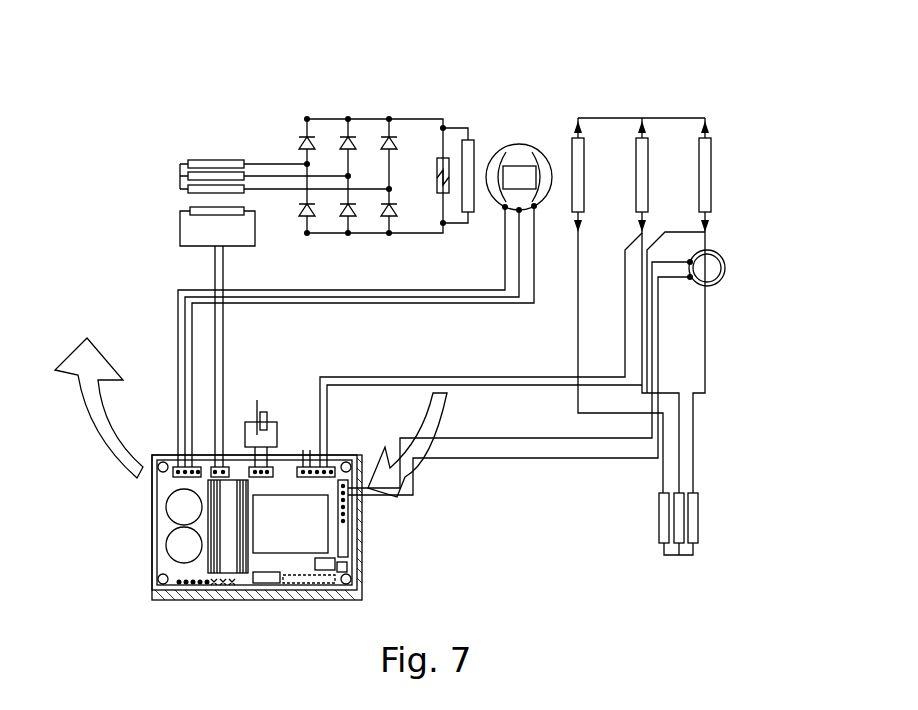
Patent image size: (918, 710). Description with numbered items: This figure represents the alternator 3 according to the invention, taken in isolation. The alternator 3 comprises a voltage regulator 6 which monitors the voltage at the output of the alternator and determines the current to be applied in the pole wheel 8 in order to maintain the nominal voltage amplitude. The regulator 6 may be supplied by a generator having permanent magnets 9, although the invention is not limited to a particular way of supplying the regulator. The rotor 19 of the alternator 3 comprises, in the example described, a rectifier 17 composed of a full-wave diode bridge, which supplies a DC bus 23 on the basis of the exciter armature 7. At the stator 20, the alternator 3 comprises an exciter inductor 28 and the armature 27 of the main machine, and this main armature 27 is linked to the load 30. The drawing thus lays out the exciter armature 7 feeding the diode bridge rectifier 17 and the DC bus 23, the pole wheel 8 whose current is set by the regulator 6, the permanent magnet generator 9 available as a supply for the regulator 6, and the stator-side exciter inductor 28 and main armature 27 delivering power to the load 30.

The alternator 3 is at (105, 200).
The exciter armature 7 is at (205, 160).
The exciter inductor 28 is at (190, 208).
The rotor 19 is at (270, 128).
The rectifier 17 is at (395, 222).
The DC bus 23 is at (418, 118).
The pole wheel 8 is at (478, 148).
The generator having permanent magnets 9 is at (520, 145).
The stator 20 is at (720, 114).
The armature of the main machine 27 is at (718, 170).
The load 30 is at (702, 520).
The voltage regulator 6 is at (150, 552).